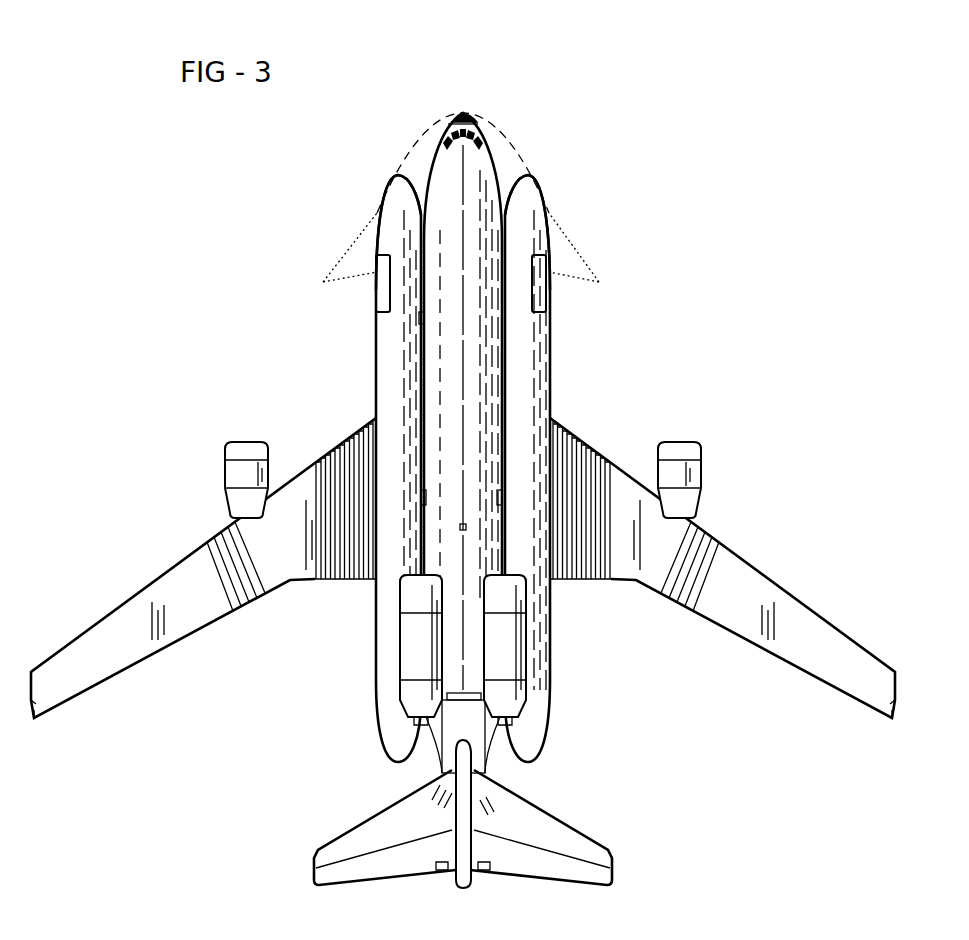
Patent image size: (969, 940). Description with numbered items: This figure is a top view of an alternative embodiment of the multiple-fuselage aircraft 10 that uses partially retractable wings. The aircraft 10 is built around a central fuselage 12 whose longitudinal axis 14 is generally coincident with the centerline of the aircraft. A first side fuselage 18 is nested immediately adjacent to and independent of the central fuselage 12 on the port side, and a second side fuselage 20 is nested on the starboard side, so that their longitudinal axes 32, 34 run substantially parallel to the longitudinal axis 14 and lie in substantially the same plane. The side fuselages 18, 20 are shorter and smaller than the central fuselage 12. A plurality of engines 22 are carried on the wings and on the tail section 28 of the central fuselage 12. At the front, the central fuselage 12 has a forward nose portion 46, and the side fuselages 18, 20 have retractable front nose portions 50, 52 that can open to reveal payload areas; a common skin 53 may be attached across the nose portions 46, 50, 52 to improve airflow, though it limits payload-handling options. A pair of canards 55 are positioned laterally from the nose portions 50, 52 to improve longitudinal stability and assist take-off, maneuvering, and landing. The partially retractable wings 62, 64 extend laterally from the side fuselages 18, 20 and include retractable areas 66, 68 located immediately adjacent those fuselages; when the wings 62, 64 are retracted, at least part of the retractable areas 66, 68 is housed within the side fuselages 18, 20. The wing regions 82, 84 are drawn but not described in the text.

The aircraft 10 is at (530, 118).
The central fuselage 12 is at (440, 168).
The longitudinal axis 14 is at (466, 376).
The first side fuselage 18 is at (388, 387).
The second side fuselage 20 is at (552, 312).
The engines 22 is at (227, 485).
The tail section 28 is at (530, 802).
The longitudinal axis 32 is at (376, 333).
The longitudinal axis 34 is at (535, 386).
The forward nose portion 46 is at (468, 110).
The retractable front nose portion 50 is at (392, 177).
The retractable front nose portion 52 is at (528, 192).
The common skin 53 is at (520, 152).
The canards 55 is at (345, 262).
The partially retractable wing 62 is at (171, 640).
The partially retractable wing 64 is at (795, 665).
The retractable area 66 is at (335, 582).
The retractable area 68 is at (578, 582).
The left wing aileron 82 is at (248, 600).
The right wing aileron 84 is at (667, 600).